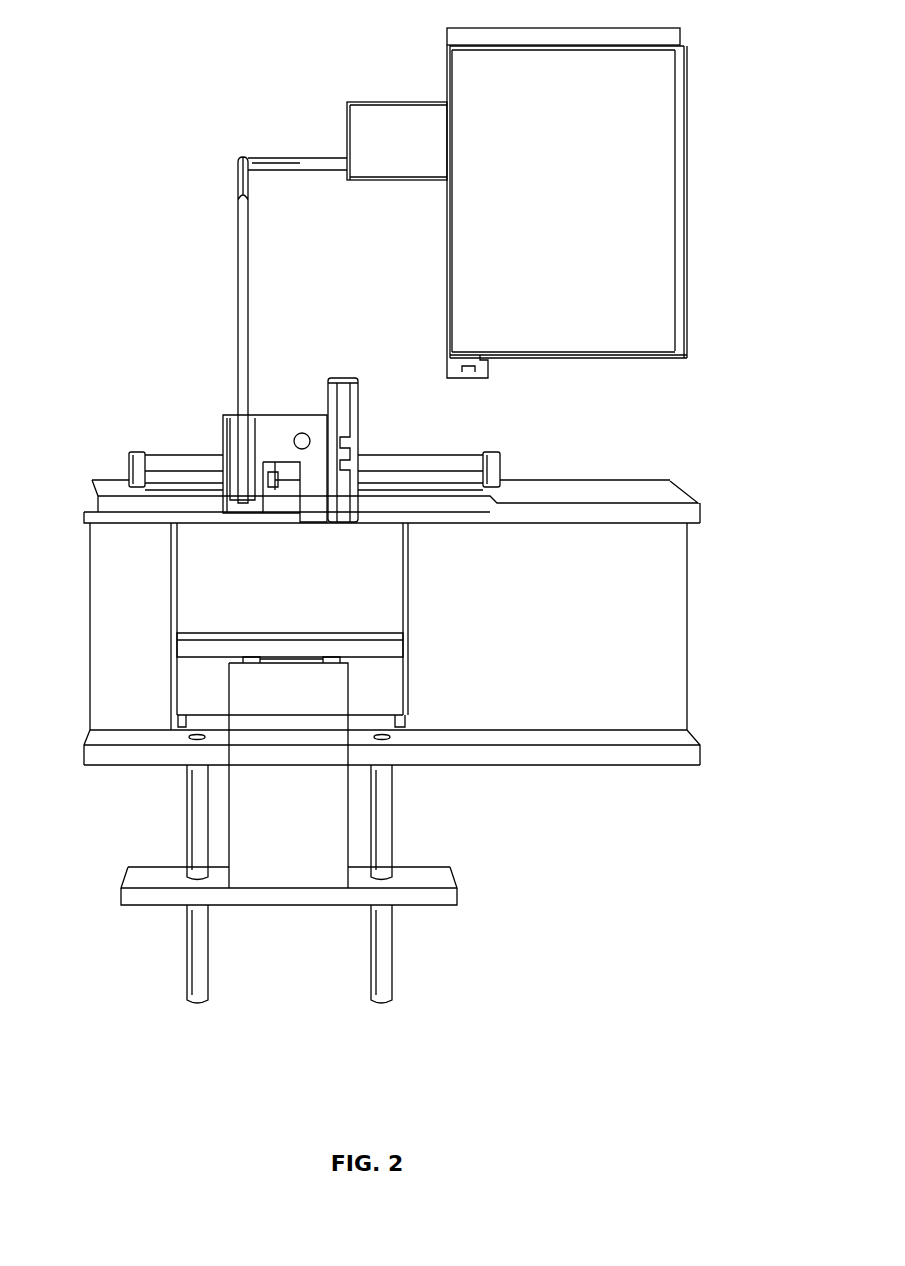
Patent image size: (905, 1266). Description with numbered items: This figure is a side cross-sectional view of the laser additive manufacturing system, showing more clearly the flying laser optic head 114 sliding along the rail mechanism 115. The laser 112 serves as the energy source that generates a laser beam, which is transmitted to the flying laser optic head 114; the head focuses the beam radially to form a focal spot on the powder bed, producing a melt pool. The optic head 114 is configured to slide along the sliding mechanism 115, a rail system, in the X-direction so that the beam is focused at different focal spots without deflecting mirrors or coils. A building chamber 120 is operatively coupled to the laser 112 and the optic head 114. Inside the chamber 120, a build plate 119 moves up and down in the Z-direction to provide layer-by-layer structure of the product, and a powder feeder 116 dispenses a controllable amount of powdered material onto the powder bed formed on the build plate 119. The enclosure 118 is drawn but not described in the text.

The laser 112 is at (372, 130).
The flying laser optic head 114 is at (222, 428).
The sliding mechanism 115 is at (165, 497).
The powder feeder 116 is at (358, 419).
The enclosure 118 is at (683, 334).
The build plate 119 is at (347, 657).
The building chamber 120 is at (343, 573).